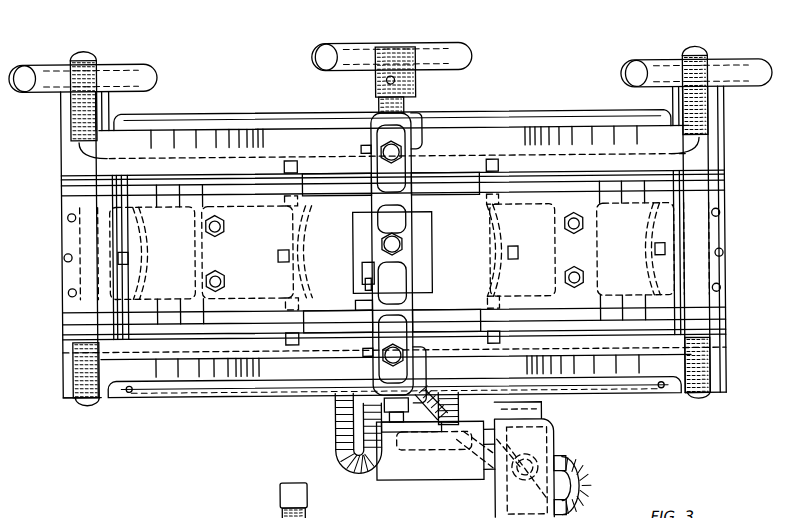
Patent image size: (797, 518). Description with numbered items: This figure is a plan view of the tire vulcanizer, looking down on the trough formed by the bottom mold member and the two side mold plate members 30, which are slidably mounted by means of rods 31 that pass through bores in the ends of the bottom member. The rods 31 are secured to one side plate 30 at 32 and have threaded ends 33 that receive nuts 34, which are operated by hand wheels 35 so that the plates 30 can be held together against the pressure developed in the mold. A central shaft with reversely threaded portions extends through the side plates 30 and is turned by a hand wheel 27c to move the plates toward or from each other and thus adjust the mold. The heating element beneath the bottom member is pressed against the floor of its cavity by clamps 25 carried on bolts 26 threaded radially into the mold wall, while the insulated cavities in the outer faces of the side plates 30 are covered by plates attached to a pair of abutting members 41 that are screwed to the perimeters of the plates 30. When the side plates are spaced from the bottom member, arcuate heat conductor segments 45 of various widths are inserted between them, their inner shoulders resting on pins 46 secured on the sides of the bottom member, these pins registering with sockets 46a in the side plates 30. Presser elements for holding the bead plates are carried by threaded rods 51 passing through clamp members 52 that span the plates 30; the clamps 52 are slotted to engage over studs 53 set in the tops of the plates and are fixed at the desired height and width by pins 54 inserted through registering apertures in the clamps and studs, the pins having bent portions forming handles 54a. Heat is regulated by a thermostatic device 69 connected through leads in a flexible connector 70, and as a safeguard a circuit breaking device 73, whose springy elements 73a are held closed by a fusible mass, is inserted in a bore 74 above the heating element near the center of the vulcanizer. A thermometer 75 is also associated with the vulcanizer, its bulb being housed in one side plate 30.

The clamp 25 is at (305, 278).
The bolt 26 is at (284, 258).
The hand wheel 27c is at (440, 64).
The side mold plate member 30 is at (185, 140).
The rod 31 is at (96, 58).
The rod securement 32 is at (75, 383).
The threaded end 33 is at (112, 106).
The nut 34 is at (62, 100).
The hand wheel 35 is at (160, 82).
The member 41 is at (226, 396).
The heat conductor segment 45 is at (62, 193).
The pin 46 is at (522, 322).
The socket 46a is at (290, 160).
The rod 51 is at (378, 258).
The clamp member 52 is at (422, 245).
The stud 53 is at (385, 160).
The pin 54 is at (372, 153).
The handle 54a is at (423, 143).
The thermostatic device 69 is at (554, 452).
The flexible connector 70 is at (592, 487).
The circuit breaking device 73 is at (335, 447).
The springy element 73a is at (347, 316).
The bore 74 is at (364, 284).
The thermometer 75 is at (428, 452).